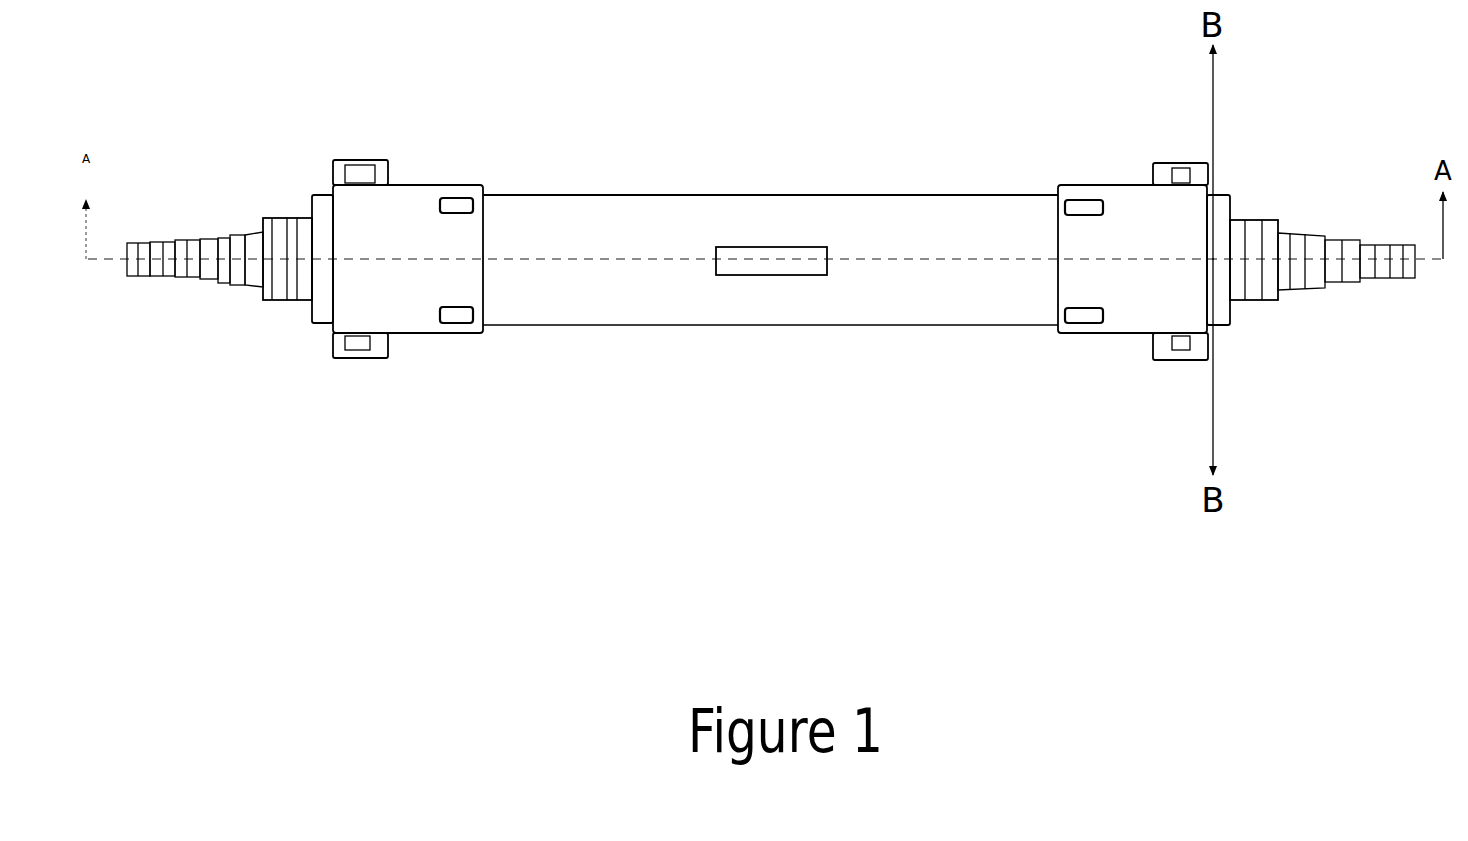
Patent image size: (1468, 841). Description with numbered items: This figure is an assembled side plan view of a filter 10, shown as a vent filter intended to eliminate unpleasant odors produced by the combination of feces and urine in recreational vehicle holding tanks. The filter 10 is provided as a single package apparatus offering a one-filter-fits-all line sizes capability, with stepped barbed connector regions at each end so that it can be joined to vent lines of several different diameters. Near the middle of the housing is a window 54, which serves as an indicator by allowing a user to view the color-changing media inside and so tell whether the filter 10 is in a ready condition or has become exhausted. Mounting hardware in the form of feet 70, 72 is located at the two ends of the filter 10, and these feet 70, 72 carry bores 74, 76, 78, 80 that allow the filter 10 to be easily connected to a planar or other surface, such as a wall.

The filter 10 is at (960, 193).
The window 54 is at (748, 243).
The foot 70 is at (352, 157).
The foot 72 is at (1173, 160).
The bore 74 is at (365, 178).
The bore 76 is at (358, 342).
The bore 78 is at (1182, 178).
The bore 80 is at (1180, 345).